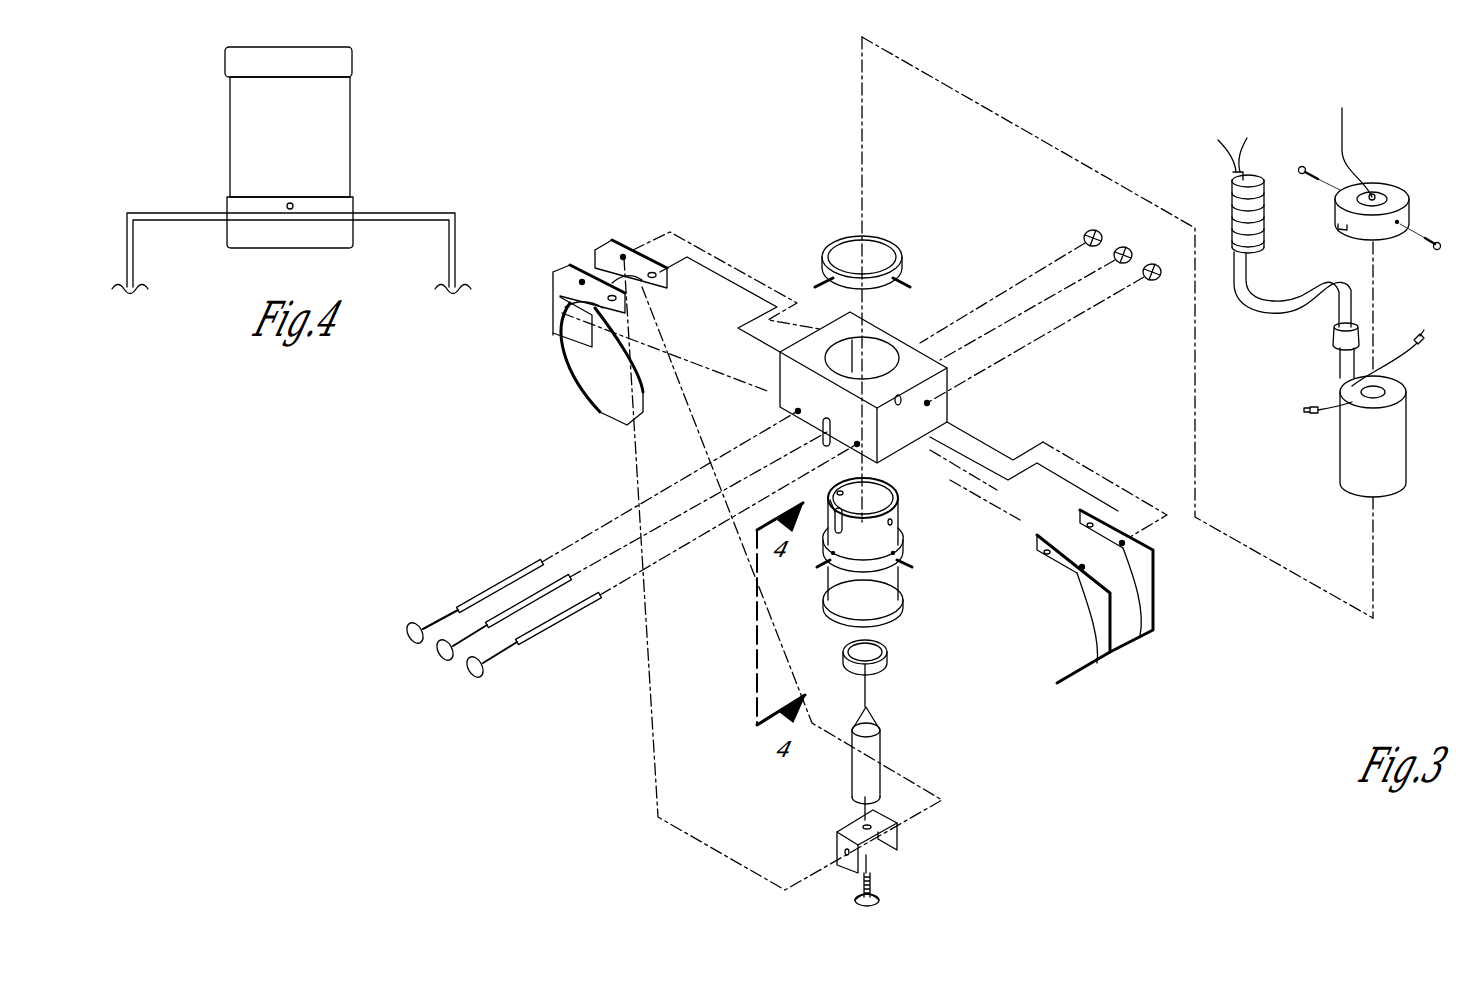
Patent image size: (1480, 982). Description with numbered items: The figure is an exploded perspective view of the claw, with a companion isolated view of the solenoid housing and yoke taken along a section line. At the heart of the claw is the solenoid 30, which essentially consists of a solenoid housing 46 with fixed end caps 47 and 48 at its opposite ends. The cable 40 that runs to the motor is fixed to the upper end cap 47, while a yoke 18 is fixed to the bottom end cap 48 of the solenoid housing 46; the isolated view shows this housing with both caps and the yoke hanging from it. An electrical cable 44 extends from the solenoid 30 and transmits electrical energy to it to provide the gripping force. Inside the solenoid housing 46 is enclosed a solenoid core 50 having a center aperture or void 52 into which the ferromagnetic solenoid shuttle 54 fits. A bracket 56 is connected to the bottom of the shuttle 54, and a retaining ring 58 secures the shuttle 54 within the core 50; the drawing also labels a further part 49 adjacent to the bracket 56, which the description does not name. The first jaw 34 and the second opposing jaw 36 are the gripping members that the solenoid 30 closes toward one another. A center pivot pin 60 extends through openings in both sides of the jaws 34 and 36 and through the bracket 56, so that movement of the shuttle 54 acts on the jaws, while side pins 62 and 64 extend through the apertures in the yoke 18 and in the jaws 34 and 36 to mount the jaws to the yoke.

In FIG. 4, the yoke 18 is at (130, 258).
In FIG. 3, the yoke 18 is at (780, 401).
In FIG. 3, the solenoid 30 is at (976, 546).
In FIG. 3, the first jaw 34 is at (590, 404).
In FIG. 3, the second opposing jaw 36 is at (1150, 610).
In FIG. 3, the cable 40 is at (1350, 155).
In FIG. 3, the electrical cable 44 is at (1233, 176).
In FIG. 4, the solenoid housing 46 is at (347, 122).
In FIG. 3, the solenoid housing 46 is at (900, 500).
In FIG. 4, the end cap 47 is at (350, 64).
In FIG. 3, the end cap 47 is at (1405, 197).
In FIG. 4, the bottom end cap 48 is at (353, 236).
In FIG. 3, the bottom end cap 48 is at (905, 615).
In FIG. 3, the mounting clip 49 is at (850, 822).
In FIG. 3, the solenoid core 50 is at (1340, 445).
In FIG. 3, the center aperture 52 is at (1395, 388).
In FIG. 3, the solenoid shuttle 54 is at (882, 755).
In FIG. 3, the bracket 56 is at (887, 852).
In FIG. 3, the retaining ring 58 is at (890, 652).
In FIG. 3, the center pivot pin 60 is at (528, 597).
In FIG. 3, the side pin 62 is at (470, 598).
In FIG. 3, the side pin 64 is at (550, 627).